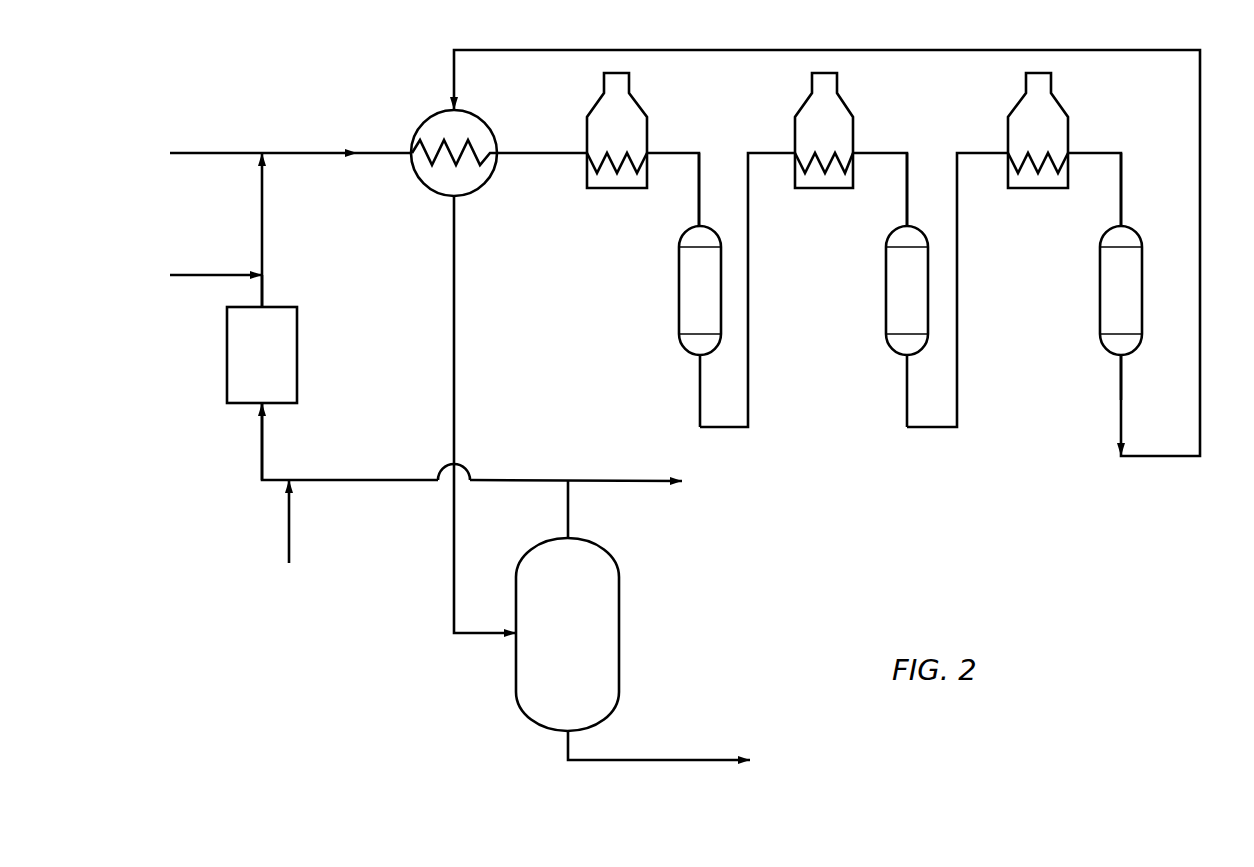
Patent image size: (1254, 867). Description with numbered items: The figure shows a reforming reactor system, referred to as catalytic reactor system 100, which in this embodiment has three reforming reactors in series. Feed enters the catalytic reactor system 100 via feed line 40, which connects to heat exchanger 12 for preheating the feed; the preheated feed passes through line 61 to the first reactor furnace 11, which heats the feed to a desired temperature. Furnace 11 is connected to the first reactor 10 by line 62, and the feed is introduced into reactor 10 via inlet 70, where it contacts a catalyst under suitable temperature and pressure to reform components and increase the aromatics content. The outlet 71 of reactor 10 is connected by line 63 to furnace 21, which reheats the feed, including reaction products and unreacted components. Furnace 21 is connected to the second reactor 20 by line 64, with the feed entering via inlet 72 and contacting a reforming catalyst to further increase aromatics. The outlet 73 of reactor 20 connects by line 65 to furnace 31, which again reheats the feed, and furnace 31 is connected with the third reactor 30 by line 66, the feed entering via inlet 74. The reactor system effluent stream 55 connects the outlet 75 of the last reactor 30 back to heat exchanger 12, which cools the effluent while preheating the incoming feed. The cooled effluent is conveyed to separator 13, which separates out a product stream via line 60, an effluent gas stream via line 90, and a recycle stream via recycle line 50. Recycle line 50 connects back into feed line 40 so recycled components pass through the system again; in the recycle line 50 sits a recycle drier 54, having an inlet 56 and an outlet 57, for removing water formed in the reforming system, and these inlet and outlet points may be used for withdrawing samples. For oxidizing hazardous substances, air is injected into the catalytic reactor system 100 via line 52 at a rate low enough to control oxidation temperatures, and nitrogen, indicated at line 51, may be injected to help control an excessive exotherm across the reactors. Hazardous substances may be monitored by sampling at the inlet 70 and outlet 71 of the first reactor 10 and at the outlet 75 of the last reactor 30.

The catalytic reactor system 100 is at (330, 62).
The feed line 40 is at (372, 154).
The recycle line 50 is at (262, 234).
The nitrogen line 51 is at (205, 274).
The line 52 is at (289, 526).
The recycle drier 54 is at (227, 347).
The inlet 56 is at (257, 407).
The outlet 57 is at (267, 304).
The reactor system effluent stream 55 is at (454, 365).
The heat exchanger 12 is at (470, 196).
The line 61 is at (548, 155).
The first reactor furnace 11 is at (603, 85).
The line 62 is at (676, 153).
The inlet 70 is at (697, 225).
The first reactor 10 is at (679, 283).
The outlet 71 is at (698, 357).
The line 63 is at (748, 309).
The furnace 21 is at (812, 85).
The line 64 is at (886, 153).
The inlet 72 is at (906, 225).
The second reactor 20 is at (886, 283).
The outlet 73 is at (905, 357).
The line 65 is at (957, 323).
The furnace 31 is at (1026, 85).
The line 66 is at (1110, 153).
The inlet 74 is at (1120, 225).
The third reactor 30 is at (1100, 283).
The outlet 75 is at (1119, 357).
The separator 13 is at (527, 712).
The line 90 is at (620, 482).
The line 60 is at (665, 760).